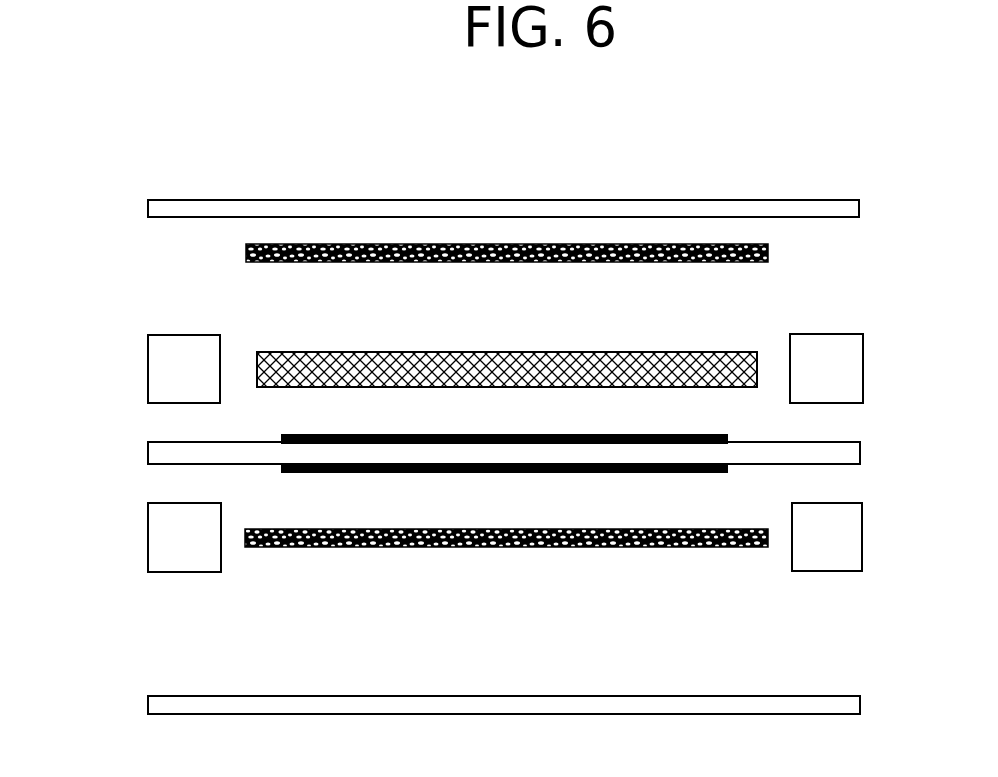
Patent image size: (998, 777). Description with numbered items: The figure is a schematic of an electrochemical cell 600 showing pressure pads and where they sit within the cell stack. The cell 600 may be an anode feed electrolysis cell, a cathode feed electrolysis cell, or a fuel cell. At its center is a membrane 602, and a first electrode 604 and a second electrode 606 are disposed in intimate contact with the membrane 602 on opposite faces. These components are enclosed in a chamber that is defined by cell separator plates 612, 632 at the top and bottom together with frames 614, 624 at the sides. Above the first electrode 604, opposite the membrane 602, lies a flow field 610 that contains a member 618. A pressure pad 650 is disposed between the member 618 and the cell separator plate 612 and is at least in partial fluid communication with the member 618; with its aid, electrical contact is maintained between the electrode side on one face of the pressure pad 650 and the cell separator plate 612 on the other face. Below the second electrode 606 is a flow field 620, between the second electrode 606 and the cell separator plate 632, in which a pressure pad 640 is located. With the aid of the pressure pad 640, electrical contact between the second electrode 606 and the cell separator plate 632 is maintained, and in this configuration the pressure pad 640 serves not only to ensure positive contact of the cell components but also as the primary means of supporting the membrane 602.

The cell 600 is at (168, 158).
The membrane 602 is at (862, 452).
The first electrode 604 is at (730, 436).
The second electrode 606 is at (730, 469).
The flow field 610 is at (548, 334).
The cell separator plate 612 is at (860, 207).
The frame 614 is at (863, 366).
The member 618 is at (636, 352).
The flow field 620 is at (548, 638).
The frame 624 is at (863, 536).
The cell separator plate 632 is at (861, 704).
The pressure pad 640 is at (637, 528).
The pressure pad 650 is at (769, 252).